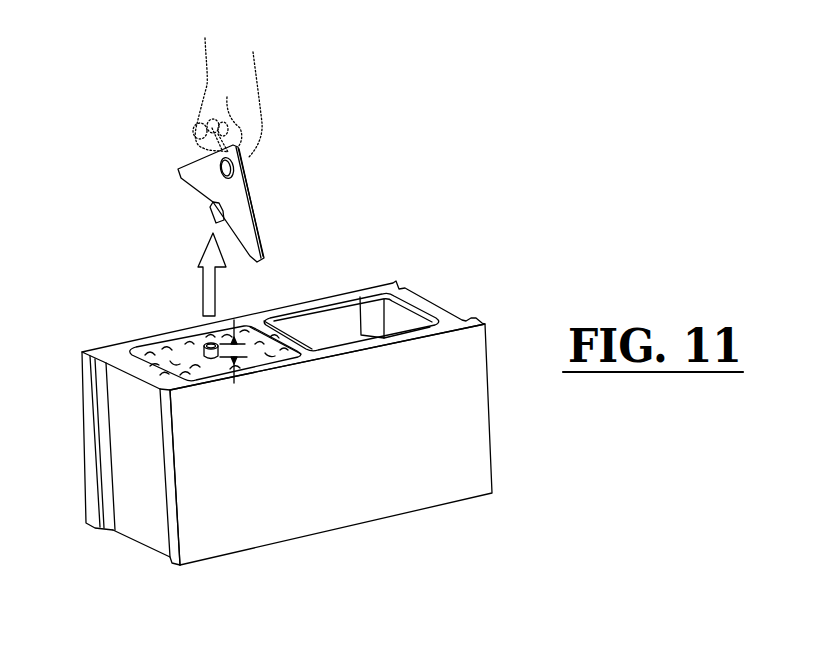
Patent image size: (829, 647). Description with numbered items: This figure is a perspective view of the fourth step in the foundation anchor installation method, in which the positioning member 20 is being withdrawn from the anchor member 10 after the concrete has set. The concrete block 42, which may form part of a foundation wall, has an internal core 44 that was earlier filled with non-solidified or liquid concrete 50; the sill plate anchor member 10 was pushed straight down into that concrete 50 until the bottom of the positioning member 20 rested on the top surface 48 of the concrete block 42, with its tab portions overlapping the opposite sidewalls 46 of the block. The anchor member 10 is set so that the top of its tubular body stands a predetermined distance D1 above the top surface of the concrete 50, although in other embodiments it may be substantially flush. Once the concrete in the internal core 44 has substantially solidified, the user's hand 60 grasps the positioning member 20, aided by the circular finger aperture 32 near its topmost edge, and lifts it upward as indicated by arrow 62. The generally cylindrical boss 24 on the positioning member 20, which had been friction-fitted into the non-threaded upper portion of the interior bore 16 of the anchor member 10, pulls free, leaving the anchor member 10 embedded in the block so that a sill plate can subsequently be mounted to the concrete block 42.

The sill plate anchor member 10 is at (208, 356).
The interior bore 16 is at (212, 344).
The positioning member 20 is at (252, 192).
The generally cylindrical boss 24 is at (212, 210).
The circular finger aperture 32 is at (222, 172).
The concrete block 42 is at (323, 495).
The internal core 44 is at (333, 318).
The sidewalls 46 is at (448, 446).
The top surface 48 is at (312, 352).
The non-solidified or liquid concrete 50 is at (157, 350).
The hand 60 is at (245, 97).
The arrow 62 is at (203, 292).
The predetermined distance D1 is at (242, 351).